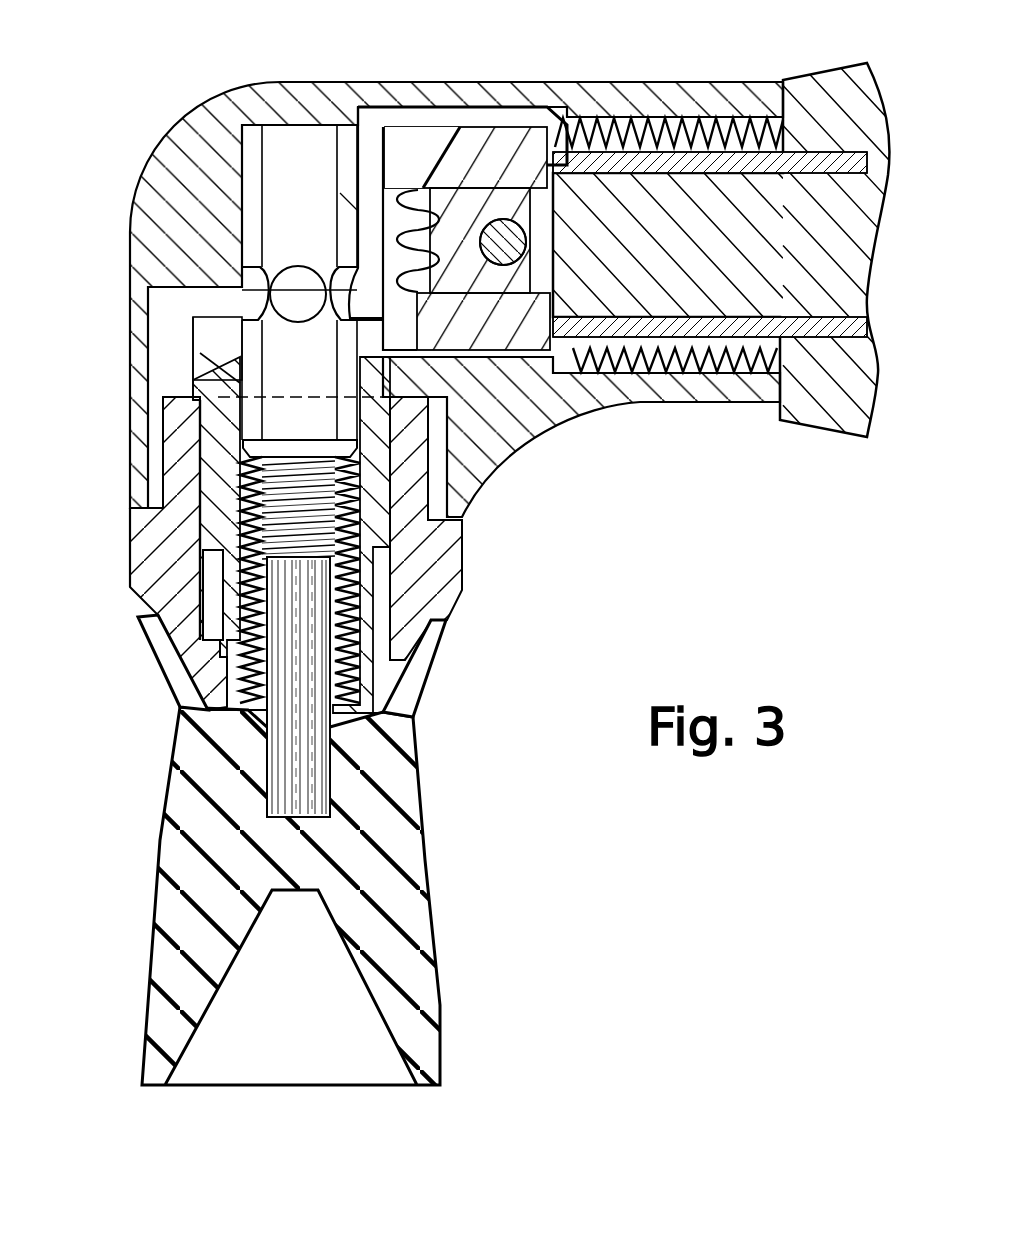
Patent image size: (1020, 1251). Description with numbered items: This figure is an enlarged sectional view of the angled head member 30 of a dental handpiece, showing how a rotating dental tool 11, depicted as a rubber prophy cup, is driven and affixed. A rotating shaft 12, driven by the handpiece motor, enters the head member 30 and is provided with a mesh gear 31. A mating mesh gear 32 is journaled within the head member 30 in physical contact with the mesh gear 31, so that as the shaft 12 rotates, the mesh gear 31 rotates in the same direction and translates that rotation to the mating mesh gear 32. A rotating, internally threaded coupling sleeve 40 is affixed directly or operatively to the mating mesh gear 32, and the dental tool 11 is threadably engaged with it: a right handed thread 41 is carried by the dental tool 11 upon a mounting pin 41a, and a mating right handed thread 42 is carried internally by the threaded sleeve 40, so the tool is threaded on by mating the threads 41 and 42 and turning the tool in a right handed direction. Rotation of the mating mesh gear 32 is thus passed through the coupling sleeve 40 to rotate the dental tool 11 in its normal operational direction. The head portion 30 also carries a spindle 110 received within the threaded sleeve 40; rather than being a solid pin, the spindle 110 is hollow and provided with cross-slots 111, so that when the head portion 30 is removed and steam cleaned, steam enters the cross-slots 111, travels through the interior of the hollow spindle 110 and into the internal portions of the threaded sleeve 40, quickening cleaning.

The angled head member 30 is at (185, 148).
The rotating shaft 12 is at (670, 237).
The mesh gear 31 is at (410, 243).
The spindle 110 is at (264, 150).
The cross-slots 111 is at (245, 297).
The mating mesh gear 32 is at (213, 343).
The mating right handed thread 42 is at (203, 506).
The coupling sleeve 40 is at (375, 512).
The right handed thread 41 is at (385, 690).
The mounting pin 41a is at (310, 760).
The dental tool 11 is at (445, 1002).